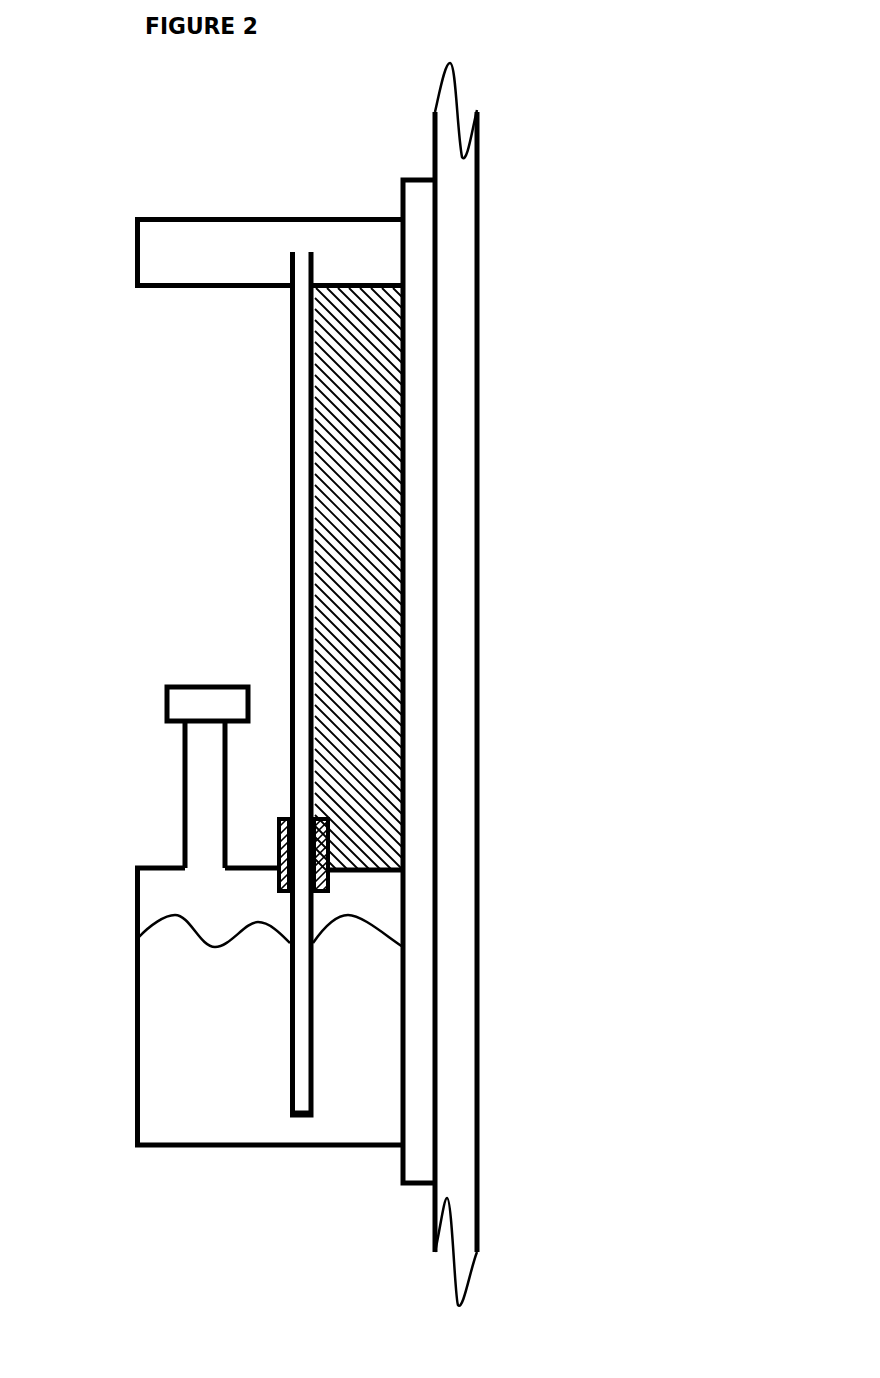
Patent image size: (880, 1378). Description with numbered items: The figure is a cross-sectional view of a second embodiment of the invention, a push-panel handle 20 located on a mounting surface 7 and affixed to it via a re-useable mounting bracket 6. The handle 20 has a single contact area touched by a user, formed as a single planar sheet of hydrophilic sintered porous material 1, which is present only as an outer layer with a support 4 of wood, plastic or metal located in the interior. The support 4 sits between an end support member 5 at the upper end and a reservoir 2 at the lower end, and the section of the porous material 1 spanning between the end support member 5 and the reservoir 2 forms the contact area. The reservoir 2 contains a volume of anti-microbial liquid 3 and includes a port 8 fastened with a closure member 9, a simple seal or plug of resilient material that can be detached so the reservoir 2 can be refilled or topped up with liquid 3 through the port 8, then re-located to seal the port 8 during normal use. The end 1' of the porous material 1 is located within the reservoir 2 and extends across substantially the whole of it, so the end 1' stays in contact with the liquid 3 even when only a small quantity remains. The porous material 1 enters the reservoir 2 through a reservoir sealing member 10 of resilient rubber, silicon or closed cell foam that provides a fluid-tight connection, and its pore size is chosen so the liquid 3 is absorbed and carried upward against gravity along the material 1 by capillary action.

The hydrophilic sintered porous material 1 is at (259, 683).
The end of the hydrophilic sintered porous material 1' is at (332, 1200).
The reservoir 2 is at (135, 977).
The anti-microbial liquid 3 is at (210, 1048).
The support 4 is at (357, 507).
The end support member 5 is at (255, 255).
The mounting bracket 6 is at (423, 223).
The mounting surface 7 is at (460, 185).
The port 8 is at (200, 802).
The closure member 9 is at (205, 703).
The reservoir sealing member 10 is at (329, 882).
The handle 20 is at (222, 550).